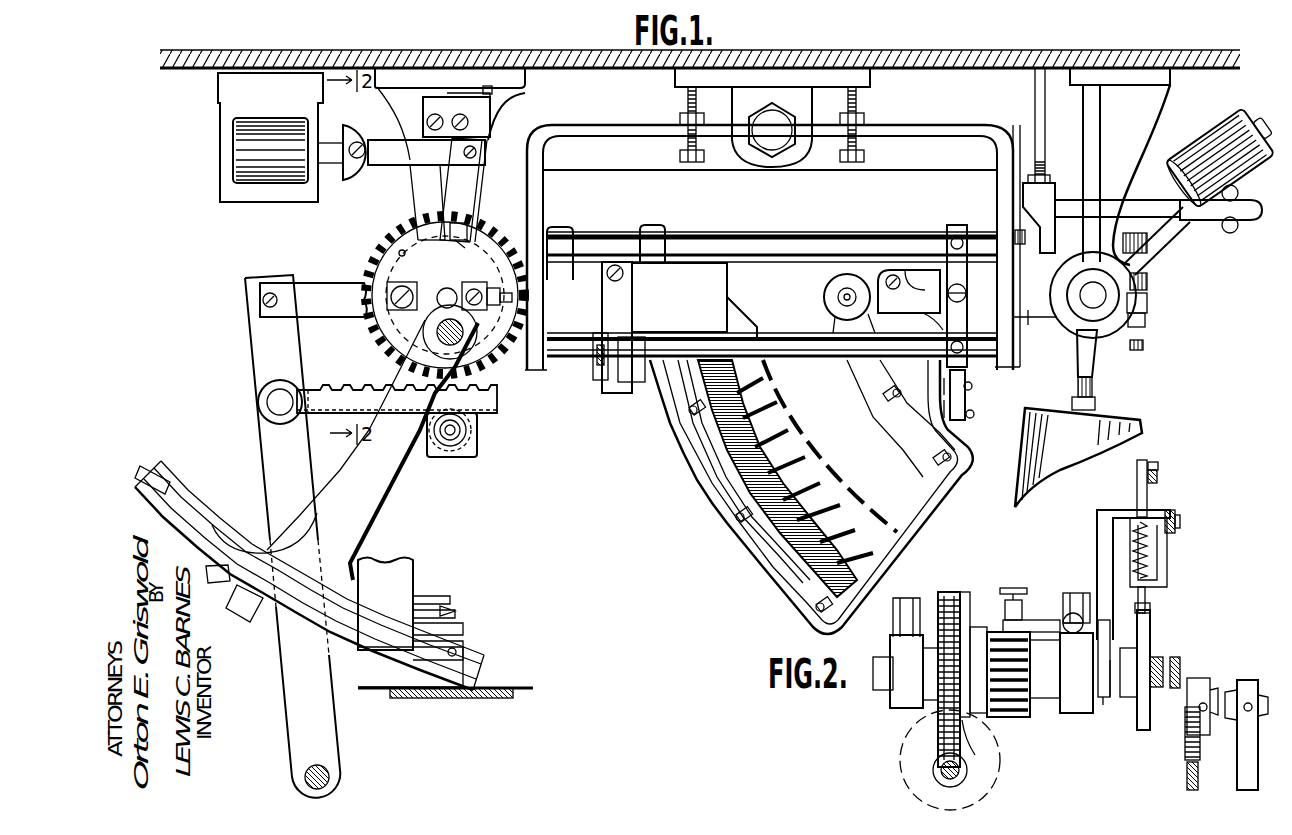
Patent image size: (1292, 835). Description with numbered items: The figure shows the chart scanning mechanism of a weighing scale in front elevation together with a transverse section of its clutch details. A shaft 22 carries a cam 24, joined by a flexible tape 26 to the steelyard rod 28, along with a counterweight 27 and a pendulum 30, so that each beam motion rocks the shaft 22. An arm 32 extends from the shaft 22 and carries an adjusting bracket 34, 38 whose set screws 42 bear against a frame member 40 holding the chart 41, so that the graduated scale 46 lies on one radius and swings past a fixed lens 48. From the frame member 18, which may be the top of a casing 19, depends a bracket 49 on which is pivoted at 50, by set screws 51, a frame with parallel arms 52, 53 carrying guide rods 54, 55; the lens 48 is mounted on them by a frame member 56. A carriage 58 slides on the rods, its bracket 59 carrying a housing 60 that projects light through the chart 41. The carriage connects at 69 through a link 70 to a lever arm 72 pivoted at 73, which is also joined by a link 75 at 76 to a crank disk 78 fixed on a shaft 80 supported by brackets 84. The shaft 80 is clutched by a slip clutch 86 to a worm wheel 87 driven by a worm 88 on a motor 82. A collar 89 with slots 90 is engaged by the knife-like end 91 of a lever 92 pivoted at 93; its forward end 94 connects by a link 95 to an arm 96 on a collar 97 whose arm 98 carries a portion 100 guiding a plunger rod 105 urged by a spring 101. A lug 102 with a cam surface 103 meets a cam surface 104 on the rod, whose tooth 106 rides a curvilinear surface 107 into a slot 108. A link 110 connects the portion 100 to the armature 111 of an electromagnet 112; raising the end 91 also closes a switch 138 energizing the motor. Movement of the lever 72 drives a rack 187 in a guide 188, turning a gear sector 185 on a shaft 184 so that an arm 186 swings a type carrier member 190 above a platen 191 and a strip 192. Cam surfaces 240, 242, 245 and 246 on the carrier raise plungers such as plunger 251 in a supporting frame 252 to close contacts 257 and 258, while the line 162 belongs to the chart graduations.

In FIG. 1, the supporting surface or frame member 18 is at (617, 58).
In FIG. 1, the casing 19 is at (943, 50).
In FIG. 1, the shaft 22 is at (1096, 296).
In FIG. 1, the cam 24 is at (1068, 330).
In FIG. 1, the flexible tape 26 is at (1040, 255).
In FIG. 1, the counterweight 27 is at (1205, 142).
In FIG. 1, the steelyard rod 28 is at (1033, 104).
In FIG. 1, the pendulum 30 is at (1115, 425).
In FIG. 1, the arm 32 is at (1035, 328).
In FIG. 1, the adjusting bracket portion 34 is at (966, 290).
In FIG. 1, the downwardly extending portion of bracket 38 is at (966, 404).
In FIG. 1, the frame member 40 is at (977, 482).
In FIG. 1, the chart 41 is at (710, 433).
In FIG. 1, the set screws 42 is at (972, 386).
In FIG. 1, the graduated scale 46 is at (913, 465).
In FIG. 1, the fixed lens 48 is at (840, 298).
In FIG. 1, the bracket 49 is at (678, 86).
In FIG. 1, the pivot 50 is at (780, 133).
In FIG. 1, the set screws 51 is at (860, 115).
In FIG. 1, the depending parallel arm 52 is at (546, 157).
In FIG. 1, the depending parallel arm 53 is at (1000, 155).
In FIG. 1, the guide rod 54 is at (763, 244).
In FIG. 1, the guide rod 55 is at (747, 362).
In FIG. 1, the frame member 56 is at (950, 232).
In FIG. 1, the traveller or carriage 58 is at (648, 233).
In FIG. 1, the forwardly extending bracket 59 is at (610, 313).
In FIG. 1, the housing 60 is at (688, 278).
In FIG. 1, the pivotal connection 69 is at (488, 284).
In FIG. 1, the link or connecting rod 70 is at (325, 286).
In FIG. 2, the link or connecting rod 70 is at (1183, 665).
In FIG. 1, the lever arm 72 is at (290, 347).
In FIG. 1, the pivot 73 is at (330, 777).
In FIG. 1, the pivoted link 75 is at (378, 307).
In FIG. 2, the pivoted link 75 is at (1159, 655).
In FIG. 1, the crank connection 76 is at (408, 290).
In FIG. 2, the crank connection 76 is at (1179, 655).
In FIG. 1, the crank disk 78 is at (418, 248).
In FIG. 2, the crank disk 78 is at (1150, 718).
In FIG. 1, the rotatable shaft 80 is at (455, 289).
In FIG. 2, the rotatable shaft 80 is at (1128, 700).
In FIG. 2, the motor 82 is at (900, 772).
In FIG. 1, the depending brackets 84 is at (528, 96).
In FIG. 2, the depending brackets 84 is at (892, 612).
In FIG. 2, the slip clutch 86 is at (967, 757).
In FIG. 1, the worm wheel 87 is at (500, 230).
In FIG. 2, the worm wheel 87 is at (953, 593).
In FIG. 2, the worm 88 is at (943, 779).
In FIG. 2, the collar 89 is at (1024, 726).
In FIG. 2, the axially extending slots 90 is at (991, 712).
In FIG. 2, the knife-like end 91 is at (1004, 628).
In FIG. 2, the lever 92 is at (1046, 618).
In FIG. 2, the pivot 93 is at (1068, 614).
In FIG. 1, the forward end of lever 94 is at (396, 244).
In FIG. 2, the forward end of lever 94 is at (1108, 618).
In FIG. 1, the link 95 is at (399, 252).
In FIG. 2, the link 95 is at (1100, 664).
In FIG. 2, the outwardly extending arm 96 is at (1101, 700).
In FIG. 2, the collar 97 is at (1109, 700).
In FIG. 1, the upwardly extending arm 98 is at (446, 185).
In FIG. 2, the upwardly extending arm 98 is at (1101, 541).
In FIG. 1, the downwardly extending portion 100 is at (471, 178).
In FIG. 2, the downwardly extending portion 100 is at (1168, 549).
In FIG. 2, the spring 101 is at (1148, 556).
In FIG. 1, the lug 102 is at (447, 231).
In FIG. 2, the lug 102 is at (1150, 611).
In FIG. 1, the cam surface 103 is at (473, 238).
In FIG. 1, the cam surface 104 is at (437, 235).
In FIG. 1, the plunger rod 105 is at (486, 130).
In FIG. 2, the plunger rod 105 is at (1137, 503).
In FIG. 1, the tooth 106 is at (487, 90).
In FIG. 2, the tooth 106 is at (1159, 467).
In FIG. 1, the curvilinear surface 107 is at (428, 128).
In FIG. 2, the curvilinear surface 107 is at (1159, 478).
In FIG. 1, the slot 108 is at (425, 99).
In FIG. 2, the slot 108 is at (1160, 468).
In FIG. 1, the link 110 is at (393, 165).
In FIG. 2, the link 110 is at (1177, 512).
In FIG. 1, the armature 111 is at (334, 165).
In FIG. 1, the electromagnet 112 is at (280, 176).
In FIG. 2, the switch 138 is at (1003, 594).
In FIG. 1, the scale marks 162 is at (777, 376).
In FIG. 1, the shaft 184 is at (444, 344).
In FIG. 2, the shaft 184 is at (1234, 693).
In FIG. 1, the gear sector 185 is at (493, 388).
In FIG. 2, the gear sector 185 is at (1185, 752).
In FIG. 1, the depending arm 186 is at (377, 498).
In FIG. 2, the depending arm 186 is at (1248, 755).
In FIG. 1, the rack 187 is at (497, 409).
In FIG. 2, the rack 187 is at (1187, 782).
In FIG. 1, the guide 188 is at (466, 432).
In FIG. 1, the type carrier member 190 is at (197, 508).
In FIG. 1, the platen 191 is at (490, 697).
In FIG. 1, the strip 192 is at (441, 700).
In FIG. 1, the cam member 240 is at (385, 663).
In FIG. 1, the second cam surface 242 is at (270, 614).
In FIG. 1, the raised portion 245 is at (215, 578).
In FIG. 1, the raised portion 246 is at (139, 473).
In FIG. 1, the plunger 251 is at (450, 658).
In FIG. 1, the supporting frame 252 is at (452, 640).
In FIG. 1, the contact 257 is at (453, 622).
In FIG. 1, the contact 258 is at (453, 603).